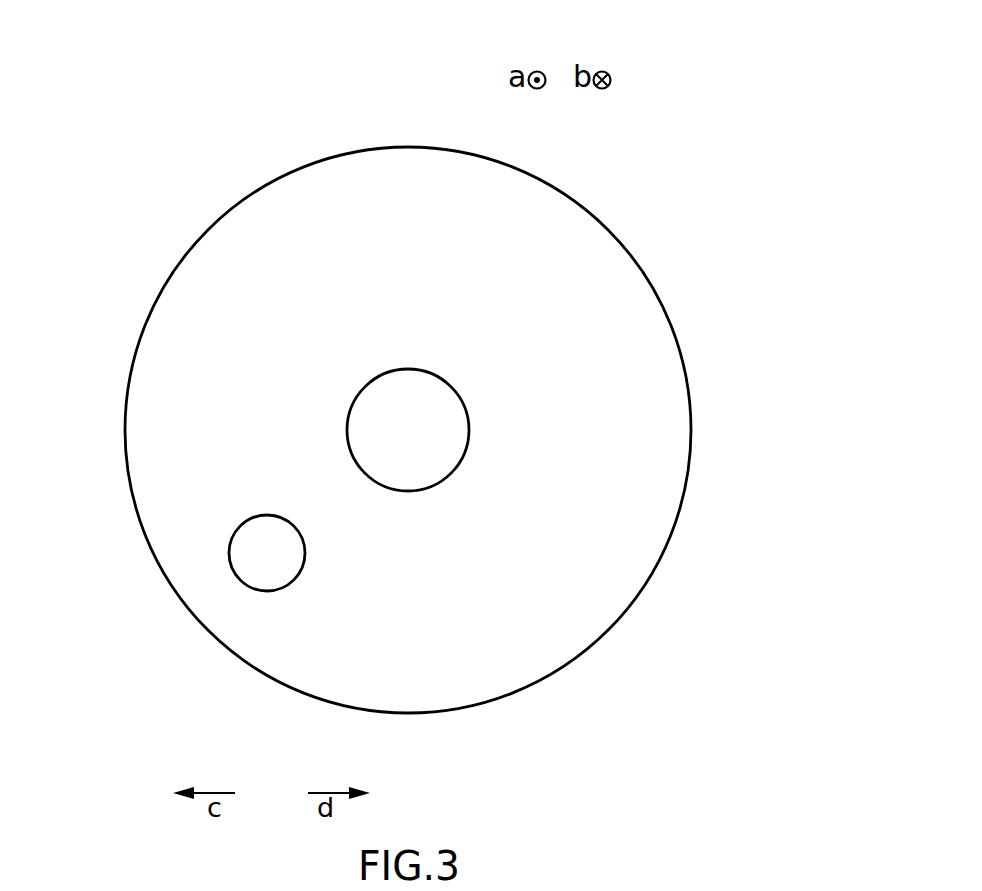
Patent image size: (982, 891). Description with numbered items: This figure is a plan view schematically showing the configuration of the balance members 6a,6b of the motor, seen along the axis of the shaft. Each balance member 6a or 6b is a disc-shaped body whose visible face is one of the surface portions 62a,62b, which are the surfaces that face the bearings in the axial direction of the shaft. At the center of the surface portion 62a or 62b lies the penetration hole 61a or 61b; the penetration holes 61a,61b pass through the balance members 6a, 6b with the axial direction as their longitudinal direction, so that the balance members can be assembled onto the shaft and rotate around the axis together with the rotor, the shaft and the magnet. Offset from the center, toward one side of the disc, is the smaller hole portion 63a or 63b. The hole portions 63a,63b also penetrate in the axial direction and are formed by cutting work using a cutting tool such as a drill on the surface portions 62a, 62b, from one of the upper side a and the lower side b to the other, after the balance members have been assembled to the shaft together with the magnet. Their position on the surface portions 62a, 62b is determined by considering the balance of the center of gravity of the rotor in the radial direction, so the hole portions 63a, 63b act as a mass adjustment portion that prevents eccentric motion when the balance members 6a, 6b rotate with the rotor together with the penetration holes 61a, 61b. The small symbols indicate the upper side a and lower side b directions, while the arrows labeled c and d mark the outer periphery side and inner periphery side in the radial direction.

The balance members 6a,6b is at (434, 366).
The balance member 6a is at (434, 366).
The balance member 6b is at (434, 366).
The penetration holes 61a,61b is at (266, 340).
The penetration hole 61a is at (266, 340).
The penetration hole 61b is at (380, 378).
The surface portions 62a,62b is at (439, 430).
The surface portion 62a is at (439, 430).
The surface portion 62b is at (590, 273).
The hole portions 63a,63b is at (159, 596).
The hole portion 63a is at (159, 596).
The hole portion 63b is at (229, 548).